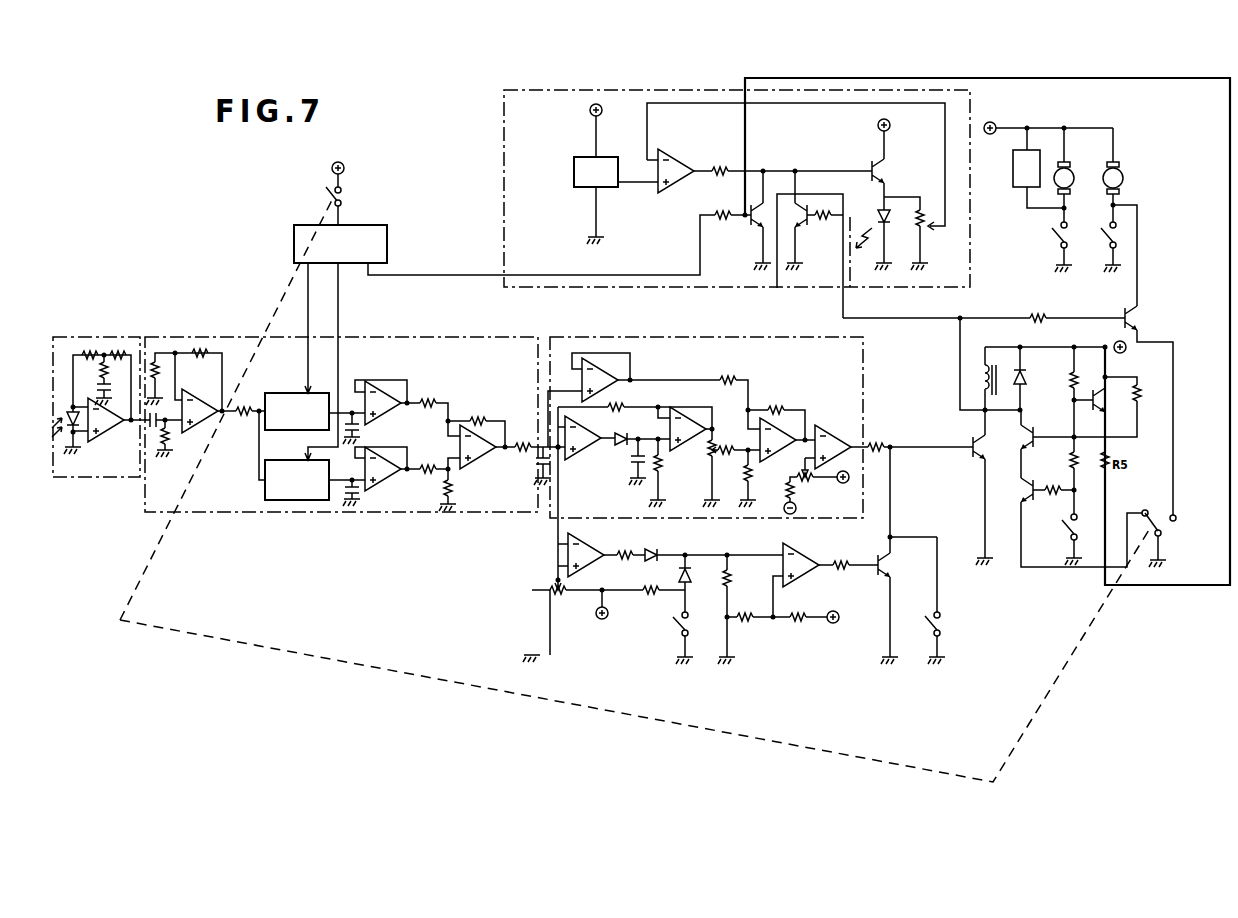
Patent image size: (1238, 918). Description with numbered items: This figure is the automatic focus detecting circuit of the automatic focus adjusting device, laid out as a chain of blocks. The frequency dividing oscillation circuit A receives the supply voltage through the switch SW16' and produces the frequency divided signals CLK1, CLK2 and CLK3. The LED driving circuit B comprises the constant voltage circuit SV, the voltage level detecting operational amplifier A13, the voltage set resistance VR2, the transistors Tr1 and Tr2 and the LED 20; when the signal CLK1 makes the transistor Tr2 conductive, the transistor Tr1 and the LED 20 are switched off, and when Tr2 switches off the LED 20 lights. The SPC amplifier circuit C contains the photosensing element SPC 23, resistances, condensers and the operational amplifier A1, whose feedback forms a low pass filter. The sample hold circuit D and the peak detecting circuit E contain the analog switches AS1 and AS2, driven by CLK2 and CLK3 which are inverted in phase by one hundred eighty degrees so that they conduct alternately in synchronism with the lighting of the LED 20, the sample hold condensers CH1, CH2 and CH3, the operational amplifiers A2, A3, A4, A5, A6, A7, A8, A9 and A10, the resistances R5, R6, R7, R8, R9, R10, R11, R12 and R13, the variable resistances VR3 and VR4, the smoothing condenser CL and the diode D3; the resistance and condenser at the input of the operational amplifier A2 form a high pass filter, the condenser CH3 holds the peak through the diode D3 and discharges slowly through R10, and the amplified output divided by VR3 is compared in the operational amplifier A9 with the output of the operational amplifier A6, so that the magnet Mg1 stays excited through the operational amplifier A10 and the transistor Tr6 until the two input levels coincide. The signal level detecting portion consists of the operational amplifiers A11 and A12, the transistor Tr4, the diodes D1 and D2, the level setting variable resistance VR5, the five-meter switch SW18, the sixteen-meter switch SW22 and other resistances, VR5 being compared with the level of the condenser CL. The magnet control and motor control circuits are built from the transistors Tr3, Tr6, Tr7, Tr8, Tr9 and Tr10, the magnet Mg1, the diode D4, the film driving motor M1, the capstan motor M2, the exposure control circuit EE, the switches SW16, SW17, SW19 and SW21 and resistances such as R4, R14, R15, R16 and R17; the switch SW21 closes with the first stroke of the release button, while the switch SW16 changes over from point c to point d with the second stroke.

The frequency dividing oscillation circuit A is at (340, 244).
The LED driving circuit B is at (737, 188).
The SPC amplifier circuit C is at (96, 407).
The sample hold circuit D is at (341, 424).
The peak detecting circuit E is at (703, 427).
The SPC 23 is at (72, 411).
The LED 20 is at (881, 233).
The constant voltage circuit SV is at (613, 174).
The operational amplifier A1 is at (111, 396).
The operational amplifier A2 is at (205, 414).
The operational amplifier A3 is at (387, 402).
The operational amplifier A4 is at (387, 469).
The operational amplifier A5 is at (487, 447).
The operational amplifier A6 is at (634, 400).
The operational amplifier A7 is at (634, 433).
The operational amplifier A8 is at (695, 457).
The operational amplifier A9 is at (787, 440).
The operational amplifier A10 is at (835, 451).
The operational amplifier A11 is at (586, 518).
The operational amplifier A12 is at (790, 603).
The voltage level detecting operational amplifier A13 is at (796, 166).
The analog switch AS1 is at (315, 402).
The analog switch AS2 is at (268, 498).
The sample hold condenser CH1 is at (348, 424).
The sample hold condenser CH2 is at (349, 498).
The sample hold condenser CH3 is at (636, 462).
The smoothing condenser CL is at (542, 459).
The frequency divided signal CLK1 is at (402, 276).
The frequency divided signal CLK2 is at (305, 288).
The frequency divided signal CLK3 is at (339, 361).
The resistor R4 is at (1083, 392).
The resistance R5 is at (438, 410).
The resistance R6 is at (438, 481).
The resistance R7 is at (476, 424).
The resistance R8 is at (540, 439).
The resistance R9 is at (637, 402).
The resistance R10 is at (667, 473).
The resistance R11 is at (740, 395).
The resistance R12 is at (757, 478).
The resistance R13 is at (776, 415).
The resistor R14 is at (1087, 477).
The resistor R15 is at (1100, 412).
The resistor R16 is at (984, 310).
The resistor R17 is at (810, 256).
The voltage set resistance VR2 is at (933, 240).
The variable resistance VR3 is at (734, 444).
The variable resistance VR4 is at (821, 496).
The level setting variable resistance VR5 is at (583, 624).
The diode D1 is at (700, 547).
The diode D2 is at (695, 585).
The diode D3 is at (641, 431).
The diode D4 is at (1030, 378).
The transistor Tr1 is at (868, 174).
The transistor Tr2 is at (743, 220).
The transistor Tr3 is at (1105, 394).
The transistor Tr4 is at (876, 571).
The transistor Tr6 is at (930, 487).
The transistor Tr7 is at (1015, 444).
The transistor Tr8 is at (1071, 522).
The transistor Tr9 is at (1142, 361).
The transistor Tr10 is at (802, 220).
The switch SW16 is at (1171, 531).
The switch SW16' is at (357, 193).
The switch SW17 is at (1088, 539).
The 5 m switch SW18 is at (668, 625).
The switch SW19 is at (1096, 247).
The switch SW21 is at (1046, 247).
The 16 m switch SW22 is at (952, 600).
The magnet Mg1 is at (1053, 365).
The film driving motor M1 is at (1123, 176).
The capstan motor M2 is at (1074, 176).
The exposure control circuit EE is at (1046, 166).